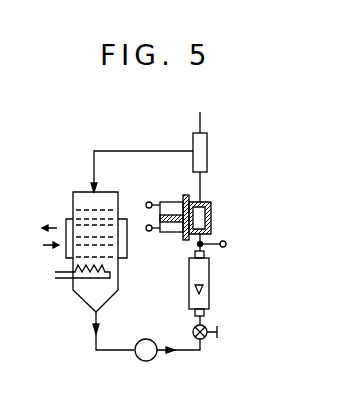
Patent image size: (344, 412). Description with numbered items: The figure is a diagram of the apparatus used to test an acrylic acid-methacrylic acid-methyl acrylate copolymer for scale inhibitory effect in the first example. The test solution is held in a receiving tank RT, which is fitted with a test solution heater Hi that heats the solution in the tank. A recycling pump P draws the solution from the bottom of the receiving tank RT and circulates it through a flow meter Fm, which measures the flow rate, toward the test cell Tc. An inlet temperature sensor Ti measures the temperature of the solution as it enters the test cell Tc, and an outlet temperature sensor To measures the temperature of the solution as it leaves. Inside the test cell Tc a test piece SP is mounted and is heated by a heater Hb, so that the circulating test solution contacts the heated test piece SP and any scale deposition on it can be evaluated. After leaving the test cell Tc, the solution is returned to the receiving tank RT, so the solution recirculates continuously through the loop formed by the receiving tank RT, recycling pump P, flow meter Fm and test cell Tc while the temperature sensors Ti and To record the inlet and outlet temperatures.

The receiving tank RT is at (117, 250).
The test solution heater Hi is at (74, 286).
The recycling pump P is at (167, 350).
The flow meter Fm is at (216, 291).
The inlet temperature sensor Ti is at (221, 254).
The outlet temperature sensor To is at (209, 138).
The test cell Tc is at (209, 203).
The test piece SP is at (184, 243).
The heater Hb is at (174, 202).